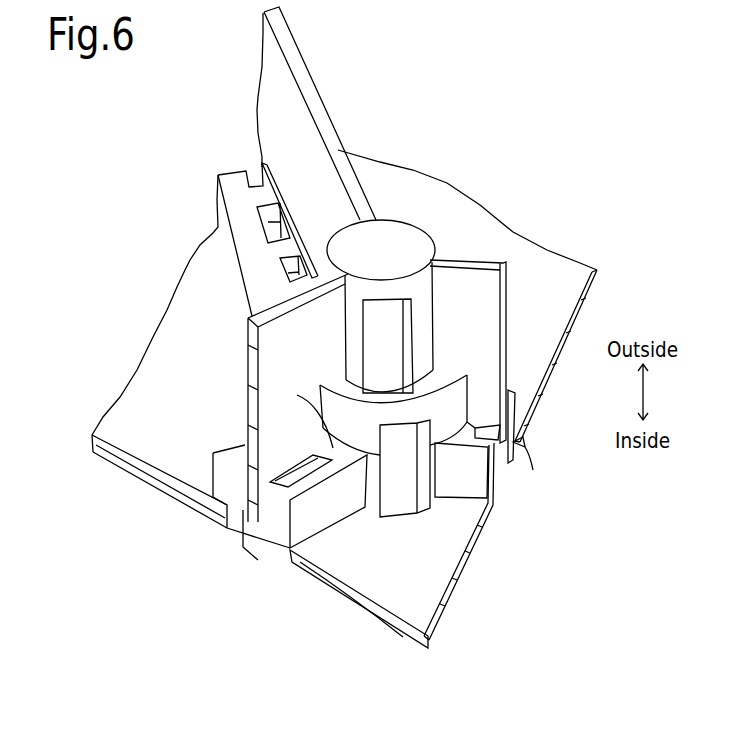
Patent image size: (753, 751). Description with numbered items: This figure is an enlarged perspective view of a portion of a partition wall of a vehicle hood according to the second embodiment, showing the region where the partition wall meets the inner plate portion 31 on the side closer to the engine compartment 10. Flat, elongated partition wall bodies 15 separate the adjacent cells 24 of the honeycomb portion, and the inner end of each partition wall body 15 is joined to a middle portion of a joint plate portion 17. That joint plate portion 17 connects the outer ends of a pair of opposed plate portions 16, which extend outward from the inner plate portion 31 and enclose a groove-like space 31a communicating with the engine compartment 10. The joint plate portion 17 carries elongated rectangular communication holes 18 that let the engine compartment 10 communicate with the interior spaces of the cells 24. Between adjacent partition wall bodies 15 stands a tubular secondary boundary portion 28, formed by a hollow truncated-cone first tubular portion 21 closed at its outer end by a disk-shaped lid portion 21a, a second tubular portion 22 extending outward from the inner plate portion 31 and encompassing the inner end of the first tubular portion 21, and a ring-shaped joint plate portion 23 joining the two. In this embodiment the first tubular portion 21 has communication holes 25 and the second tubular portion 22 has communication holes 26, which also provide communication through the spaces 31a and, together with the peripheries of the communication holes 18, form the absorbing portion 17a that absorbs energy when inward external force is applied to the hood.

The engine compartment 10 is at (155, 589).
The partition wall body 15 is at (330, 117).
The opposed plate portion 16 is at (250, 278).
The joint plate portion 17 is at (233, 173).
The absorbing portion 17a is at (340, 384).
The communication hole 18 is at (280, 218).
The first tubular portion 21 is at (423, 310).
The lid portion 21a is at (391, 218).
The second tubular portion 22 is at (453, 393).
The joint plate portion 23 is at (443, 372).
The cell 24 is at (576, 297).
The communication hole 25 is at (370, 340).
The communication hole 26 is at (394, 505).
The secondary boundary portion 28 is at (447, 211).
The inner plate portion 31 is at (445, 562).
The groove-like space 31a is at (275, 545).